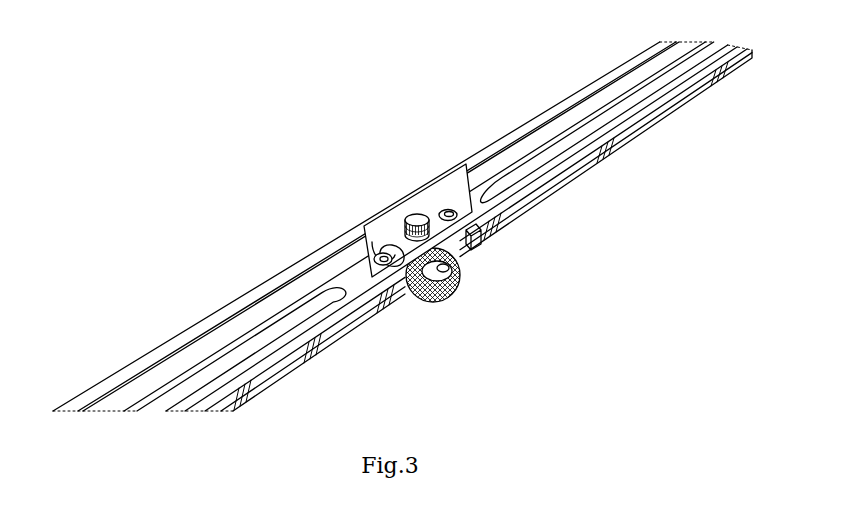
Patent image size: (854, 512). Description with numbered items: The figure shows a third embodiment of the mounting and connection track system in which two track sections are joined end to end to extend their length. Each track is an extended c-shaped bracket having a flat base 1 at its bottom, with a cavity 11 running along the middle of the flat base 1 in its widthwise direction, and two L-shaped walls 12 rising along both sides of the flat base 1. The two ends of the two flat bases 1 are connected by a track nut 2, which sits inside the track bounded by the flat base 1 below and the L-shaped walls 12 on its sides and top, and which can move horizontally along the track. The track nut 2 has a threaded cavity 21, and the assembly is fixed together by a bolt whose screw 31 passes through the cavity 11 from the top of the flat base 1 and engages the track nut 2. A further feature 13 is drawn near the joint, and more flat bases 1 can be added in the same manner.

The flat base 1 is at (193, 358).
The cavity 11 is at (318, 300).
The L-shaped wall 12 is at (538, 130).
The positioning hole 13 is at (460, 196).
The track nut 2 is at (372, 228).
The cavity 21 is at (392, 222).
The screw 31 is at (406, 215).